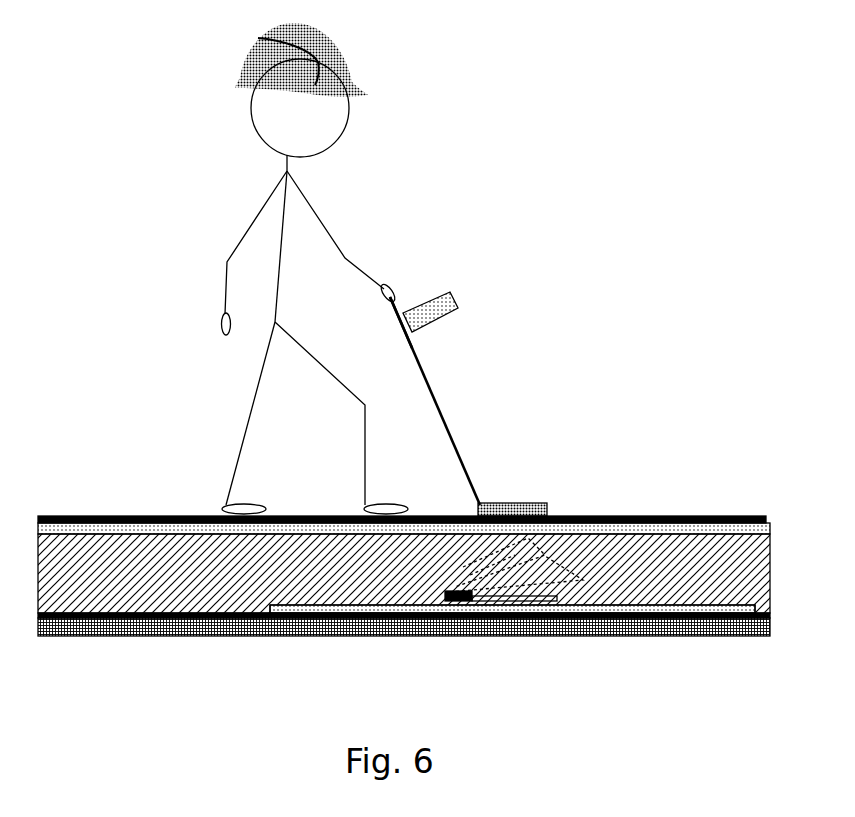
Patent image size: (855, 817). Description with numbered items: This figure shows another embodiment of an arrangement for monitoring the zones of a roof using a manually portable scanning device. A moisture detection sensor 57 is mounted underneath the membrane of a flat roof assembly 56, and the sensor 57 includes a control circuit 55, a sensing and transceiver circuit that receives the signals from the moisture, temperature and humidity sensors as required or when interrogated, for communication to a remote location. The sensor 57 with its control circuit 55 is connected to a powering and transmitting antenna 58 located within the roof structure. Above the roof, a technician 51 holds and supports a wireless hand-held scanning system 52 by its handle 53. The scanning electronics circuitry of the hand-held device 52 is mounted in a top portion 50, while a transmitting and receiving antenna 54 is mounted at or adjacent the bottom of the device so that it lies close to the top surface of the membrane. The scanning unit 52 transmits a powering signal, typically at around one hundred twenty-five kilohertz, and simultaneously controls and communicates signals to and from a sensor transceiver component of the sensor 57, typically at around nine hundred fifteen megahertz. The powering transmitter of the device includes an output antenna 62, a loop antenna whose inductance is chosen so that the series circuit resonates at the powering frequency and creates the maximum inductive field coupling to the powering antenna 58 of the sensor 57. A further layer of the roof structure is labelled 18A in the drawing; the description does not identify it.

The technician 51 is at (343, 230).
The wireless hand-held scanning system 52 is at (448, 402).
The handle 53 is at (407, 282).
The top portion 50 is at (458, 293).
The transmitting and receiving antenna 54 is at (522, 492).
The output antenna 62 is at (607, 512).
The flat roof assembly 56 is at (672, 565).
The control circuit 55 is at (607, 623).
The moisture detection sensor 57 is at (458, 603).
The powering and transmitting antenna 58 is at (541, 556).
The mesh base layer 18A is at (687, 623).